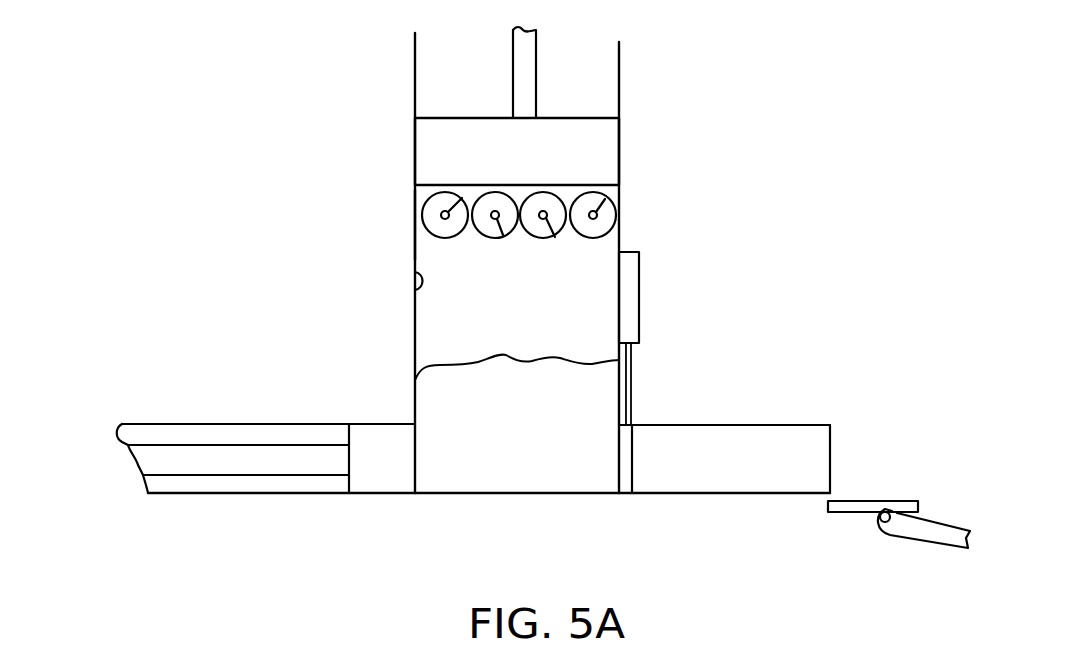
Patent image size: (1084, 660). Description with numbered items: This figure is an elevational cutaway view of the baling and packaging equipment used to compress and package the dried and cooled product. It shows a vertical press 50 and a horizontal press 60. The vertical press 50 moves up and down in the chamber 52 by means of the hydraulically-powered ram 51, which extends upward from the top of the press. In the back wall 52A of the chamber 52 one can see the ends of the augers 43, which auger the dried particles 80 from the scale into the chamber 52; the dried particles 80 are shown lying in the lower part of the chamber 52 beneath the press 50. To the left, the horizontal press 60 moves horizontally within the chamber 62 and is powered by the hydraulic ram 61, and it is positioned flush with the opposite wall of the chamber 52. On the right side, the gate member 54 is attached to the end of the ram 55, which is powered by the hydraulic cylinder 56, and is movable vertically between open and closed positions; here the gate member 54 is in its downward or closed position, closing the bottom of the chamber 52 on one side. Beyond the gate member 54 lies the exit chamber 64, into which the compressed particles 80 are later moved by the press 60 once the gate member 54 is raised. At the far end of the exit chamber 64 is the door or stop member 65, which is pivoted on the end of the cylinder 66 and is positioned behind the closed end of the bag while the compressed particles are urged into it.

The augers 43 is at (557, 194).
The vertical press 50 is at (608, 143).
The hydraulically-powered ram 51 is at (533, 46).
The chamber 52 is at (418, 272).
The back wall 52A is at (430, 245).
The gate member 54 is at (627, 442).
The ram 55 is at (632, 380).
The hydraulic cylinder 56 is at (640, 300).
The horizontal press 60 is at (382, 485).
The hydraulic ram 61 is at (170, 455).
The chamber 62 is at (250, 495).
The exit chamber 64 is at (800, 425).
The door or stop member 65 is at (874, 500).
The cylinder 66 is at (928, 543).
The dried particles 80 is at (570, 475).